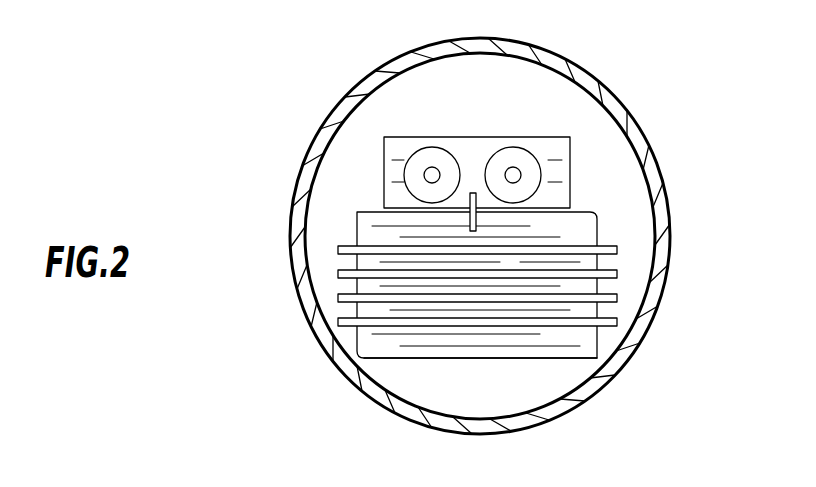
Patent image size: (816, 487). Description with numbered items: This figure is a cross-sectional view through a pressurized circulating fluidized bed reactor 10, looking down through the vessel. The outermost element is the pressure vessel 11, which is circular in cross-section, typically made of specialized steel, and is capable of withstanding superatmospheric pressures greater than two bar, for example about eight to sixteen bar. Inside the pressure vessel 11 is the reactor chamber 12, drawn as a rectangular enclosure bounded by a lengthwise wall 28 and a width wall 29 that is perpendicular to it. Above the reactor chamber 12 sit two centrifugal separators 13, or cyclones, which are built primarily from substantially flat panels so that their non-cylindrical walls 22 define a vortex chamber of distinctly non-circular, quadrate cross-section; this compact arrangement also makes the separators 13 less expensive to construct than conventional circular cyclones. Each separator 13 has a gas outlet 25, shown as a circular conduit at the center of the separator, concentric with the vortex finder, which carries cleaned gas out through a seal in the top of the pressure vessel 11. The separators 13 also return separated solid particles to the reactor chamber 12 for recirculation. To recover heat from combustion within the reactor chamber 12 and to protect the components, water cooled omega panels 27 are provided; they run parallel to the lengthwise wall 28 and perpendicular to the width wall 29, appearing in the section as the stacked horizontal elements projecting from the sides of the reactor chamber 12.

The pressurized circulating fluidized bed reactor 10 is at (658, 365).
The pressure vessel 11 is at (660, 193).
The reactor chamber 12 is at (347, 346).
The centrifugal separator 13 is at (469, 91).
The non-cylindrical walls 22 is at (384, 173).
The gas outlet 25 is at (513, 173).
The omega panels 27 is at (340, 272).
The lengthwise wall 28 is at (446, 360).
The width wall 29 is at (340, 298).